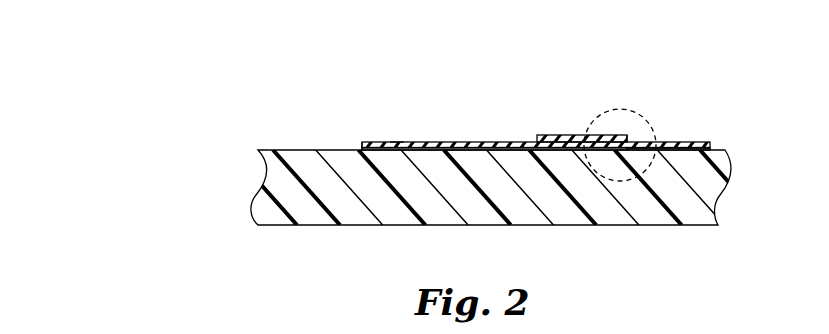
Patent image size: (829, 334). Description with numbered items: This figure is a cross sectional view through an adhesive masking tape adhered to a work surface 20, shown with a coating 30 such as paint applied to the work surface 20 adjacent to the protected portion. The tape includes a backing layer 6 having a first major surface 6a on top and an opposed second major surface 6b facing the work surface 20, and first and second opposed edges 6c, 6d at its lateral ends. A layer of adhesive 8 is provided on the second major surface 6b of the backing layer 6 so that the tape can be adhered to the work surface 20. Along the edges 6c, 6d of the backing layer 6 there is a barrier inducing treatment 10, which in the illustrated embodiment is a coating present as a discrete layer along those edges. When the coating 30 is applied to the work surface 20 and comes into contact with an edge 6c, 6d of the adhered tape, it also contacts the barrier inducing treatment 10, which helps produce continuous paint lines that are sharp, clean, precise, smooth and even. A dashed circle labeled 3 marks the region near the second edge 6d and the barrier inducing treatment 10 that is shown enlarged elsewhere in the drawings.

The work surface 20 is at (283, 150).
The barrier inducing treatment 10 is at (362, 150).
The backing layer 6 is at (430, 142).
The first major surface 6a is at (397, 142).
The second major surface 6b is at (543, 152).
The first edge 6c is at (362, 147).
The second edge 6d is at (626, 146).
The layer of adhesive 8 is at (475, 148).
The coating 30 is at (678, 148).
The detail region 3 is at (619, 108).